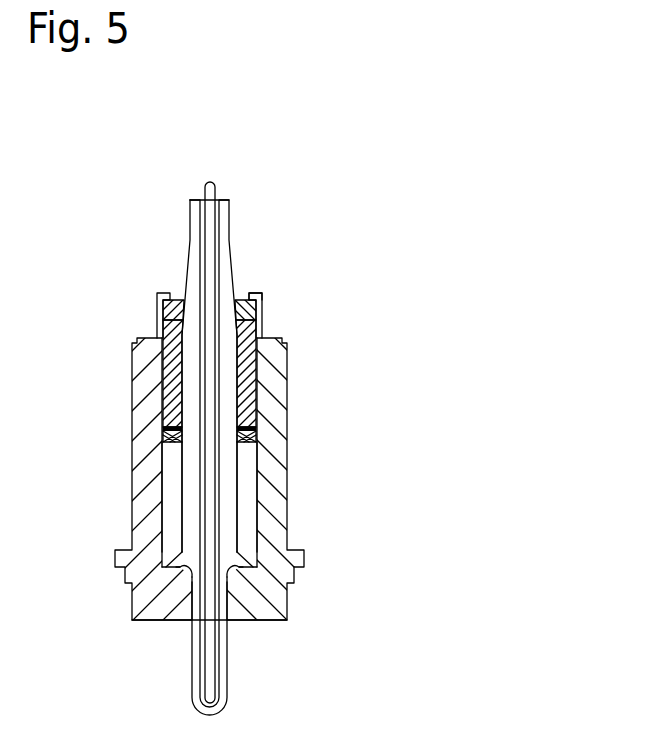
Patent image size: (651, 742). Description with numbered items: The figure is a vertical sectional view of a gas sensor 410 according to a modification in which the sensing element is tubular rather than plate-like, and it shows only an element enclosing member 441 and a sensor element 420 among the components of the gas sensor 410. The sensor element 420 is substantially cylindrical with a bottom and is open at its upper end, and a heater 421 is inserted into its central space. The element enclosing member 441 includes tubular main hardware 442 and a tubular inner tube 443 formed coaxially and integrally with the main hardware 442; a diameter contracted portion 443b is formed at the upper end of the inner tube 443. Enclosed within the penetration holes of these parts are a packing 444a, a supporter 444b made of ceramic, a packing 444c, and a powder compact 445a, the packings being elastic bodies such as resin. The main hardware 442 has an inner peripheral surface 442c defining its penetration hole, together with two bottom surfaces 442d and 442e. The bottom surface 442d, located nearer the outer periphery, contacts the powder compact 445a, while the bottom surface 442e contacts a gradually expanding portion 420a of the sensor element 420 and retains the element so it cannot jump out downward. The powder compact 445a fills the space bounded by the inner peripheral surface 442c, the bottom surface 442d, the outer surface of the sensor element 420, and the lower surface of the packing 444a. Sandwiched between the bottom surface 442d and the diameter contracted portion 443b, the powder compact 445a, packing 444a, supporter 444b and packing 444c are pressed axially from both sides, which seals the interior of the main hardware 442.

The gas sensor 410 is at (172, 153).
The element enclosing member 441 is at (258, 180).
The main hardware 442 is at (268, 537).
The inner peripheral surface 442c is at (170, 487).
The bottom surface 442d is at (172, 555).
The bottom surface 442e is at (178, 567).
The inner tube 443 is at (157, 325).
The diameter contracted portion 443b is at (258, 295).
The packing 444a is at (253, 440).
The supporter 444b is at (253, 368).
The packing 444c is at (170, 295).
The powder compact 445a is at (245, 480).
The sensor element 420 is at (227, 693).
The gradually expanding portion 420a is at (230, 568).
The heater 421 is at (213, 657).